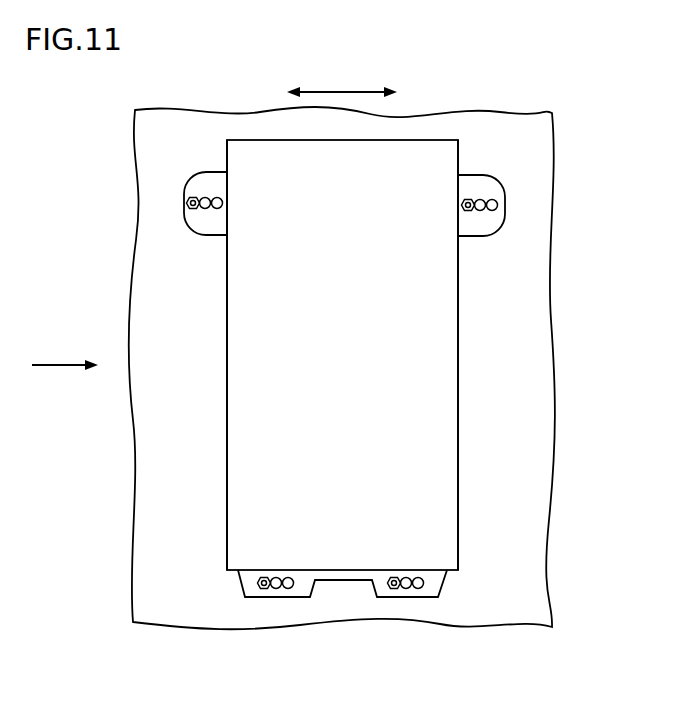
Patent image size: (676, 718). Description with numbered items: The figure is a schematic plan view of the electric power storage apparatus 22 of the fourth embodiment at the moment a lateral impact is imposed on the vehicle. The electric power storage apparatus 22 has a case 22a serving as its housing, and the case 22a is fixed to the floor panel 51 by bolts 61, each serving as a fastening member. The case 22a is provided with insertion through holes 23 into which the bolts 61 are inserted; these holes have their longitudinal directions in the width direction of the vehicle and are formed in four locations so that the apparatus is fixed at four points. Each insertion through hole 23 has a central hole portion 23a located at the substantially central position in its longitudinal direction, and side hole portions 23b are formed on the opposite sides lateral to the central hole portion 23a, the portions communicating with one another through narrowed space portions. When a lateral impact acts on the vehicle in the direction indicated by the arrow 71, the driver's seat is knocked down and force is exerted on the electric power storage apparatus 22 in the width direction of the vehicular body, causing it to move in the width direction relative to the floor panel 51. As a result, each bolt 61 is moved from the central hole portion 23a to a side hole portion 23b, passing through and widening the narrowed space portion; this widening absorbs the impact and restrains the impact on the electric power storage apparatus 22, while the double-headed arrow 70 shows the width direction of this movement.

The electric power storage apparatus 22 is at (420, 362).
The case 22a is at (420, 415).
The insertion through hole 23 is at (368, 437).
The central hole portion 23a is at (486, 200).
The side hole portion 23b is at (498, 205).
The floor panel 51 is at (505, 467).
The bolt 61 is at (187, 203).
The sliding direction 70 is at (345, 90).
The arrow 71 is at (58, 370).